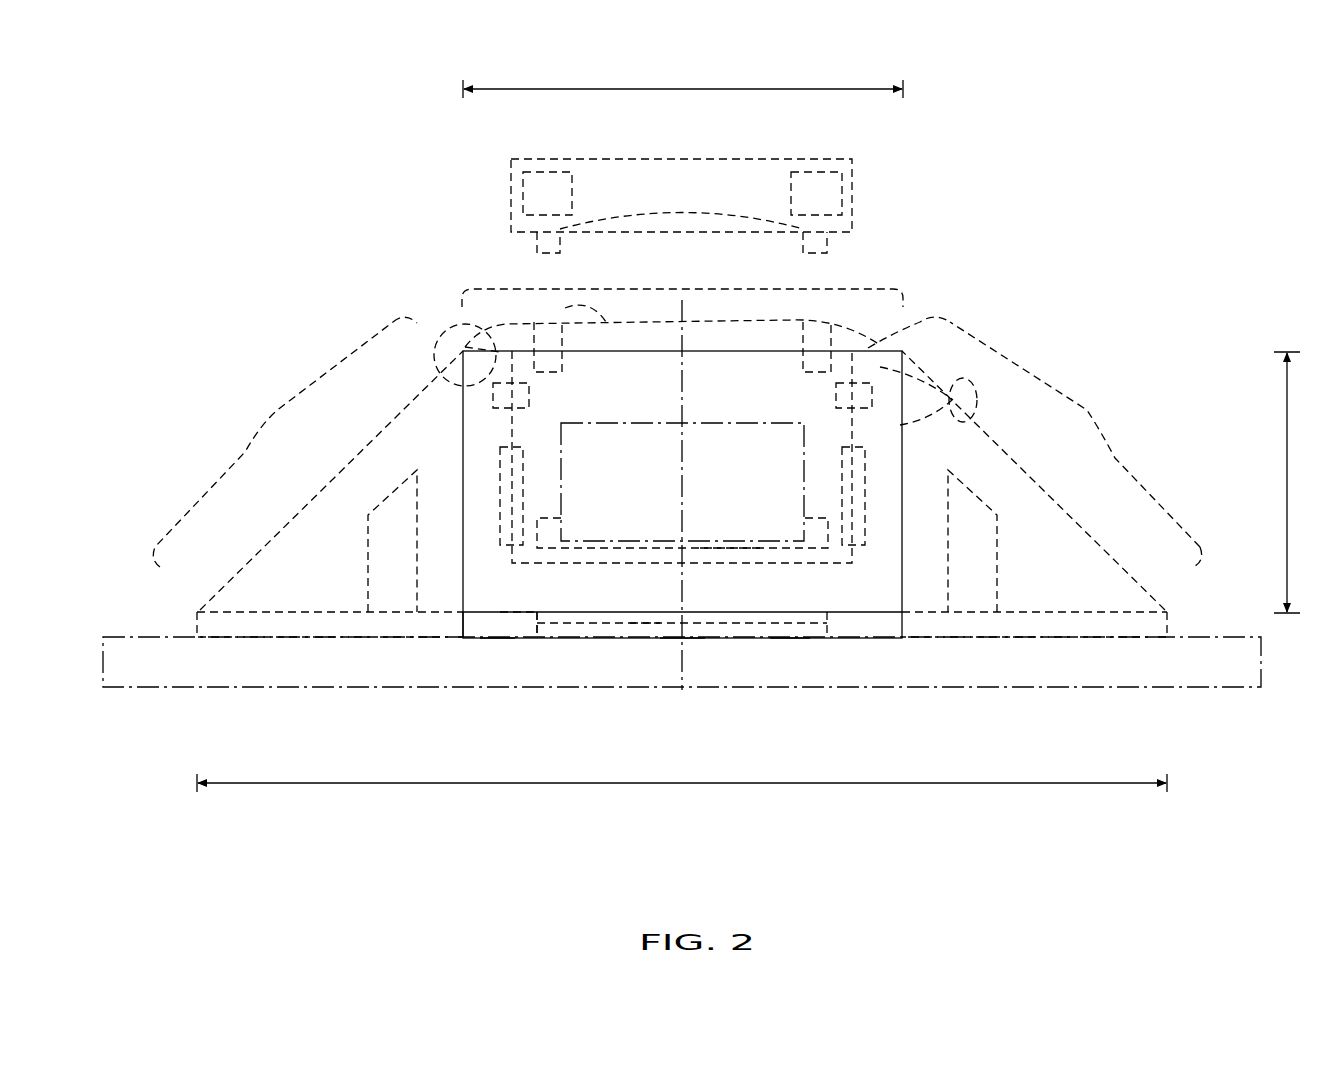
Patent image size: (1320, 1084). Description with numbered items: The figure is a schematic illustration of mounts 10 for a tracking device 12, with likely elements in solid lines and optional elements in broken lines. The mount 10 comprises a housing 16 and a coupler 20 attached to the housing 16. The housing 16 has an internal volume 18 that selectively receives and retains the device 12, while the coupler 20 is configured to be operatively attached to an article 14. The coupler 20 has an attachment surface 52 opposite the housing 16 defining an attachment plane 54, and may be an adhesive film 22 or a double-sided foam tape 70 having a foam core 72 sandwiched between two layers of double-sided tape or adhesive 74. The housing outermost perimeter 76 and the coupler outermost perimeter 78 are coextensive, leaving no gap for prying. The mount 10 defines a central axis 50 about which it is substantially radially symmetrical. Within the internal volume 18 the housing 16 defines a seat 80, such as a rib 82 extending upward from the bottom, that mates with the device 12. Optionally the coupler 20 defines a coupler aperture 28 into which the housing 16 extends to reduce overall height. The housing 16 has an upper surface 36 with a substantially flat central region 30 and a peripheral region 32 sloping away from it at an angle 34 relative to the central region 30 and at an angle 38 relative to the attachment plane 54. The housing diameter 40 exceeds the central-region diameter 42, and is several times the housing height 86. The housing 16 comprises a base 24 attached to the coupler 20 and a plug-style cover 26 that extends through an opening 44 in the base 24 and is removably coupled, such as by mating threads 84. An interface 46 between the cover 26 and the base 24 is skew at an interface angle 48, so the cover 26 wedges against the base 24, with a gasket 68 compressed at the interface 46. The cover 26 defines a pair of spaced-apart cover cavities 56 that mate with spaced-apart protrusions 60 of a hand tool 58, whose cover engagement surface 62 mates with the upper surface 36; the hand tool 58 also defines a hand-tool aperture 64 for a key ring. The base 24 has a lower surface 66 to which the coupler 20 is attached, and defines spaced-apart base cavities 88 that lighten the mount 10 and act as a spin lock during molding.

The mount 10 is at (963, 148).
The device 12 is at (680, 423).
The article 14 is at (1188, 688).
The housing 16 is at (869, 323).
The internal volume 18 is at (718, 380).
The coupler 20 is at (848, 640).
The adhesive film 22 is at (870, 613).
The base 24 is at (585, 627).
The cover 26 is at (758, 346).
The coupler aperture 28 is at (537, 623).
The central region 30 is at (657, 286).
The peripheral region 32 is at (280, 408).
The angle 34 is at (450, 320).
The upper surface 36 is at (574, 308).
The angle 38 is at (243, 575).
The housing diameter 40 is at (880, 783).
The central-region diameter 42 is at (785, 89).
The opening 44 is at (488, 349).
The interface 46 is at (440, 371).
The interface angle 48 is at (898, 330).
The central axis 50 is at (682, 645).
The attachment surface 52 is at (498, 638).
The attachment plane 54 is at (790, 640).
The spaced-apart cover cavities 56 is at (562, 370).
The hand tool 58 is at (690, 157).
The spaced-apart protrusions 60 is at (558, 240).
The cover engagement surface 62 is at (660, 223).
The hand-tool aperture 64 is at (572, 192).
The lower surface 66 is at (297, 622).
The gasket 68 is at (529, 397).
The double-sided foam tape 70 is at (478, 641).
The foam core 72 is at (508, 622).
The double-sided tape or adhesive 74 is at (645, 612).
The housing outermost perimeter 76 is at (1170, 612).
The coupler outermost perimeter 78 is at (1170, 626).
The seat 80 is at (748, 545).
The rib 82 is at (550, 517).
The mating threads 84 is at (497, 482).
The housing height 86 is at (1285, 485).
The spaced-apart base cavities 88 is at (415, 548).